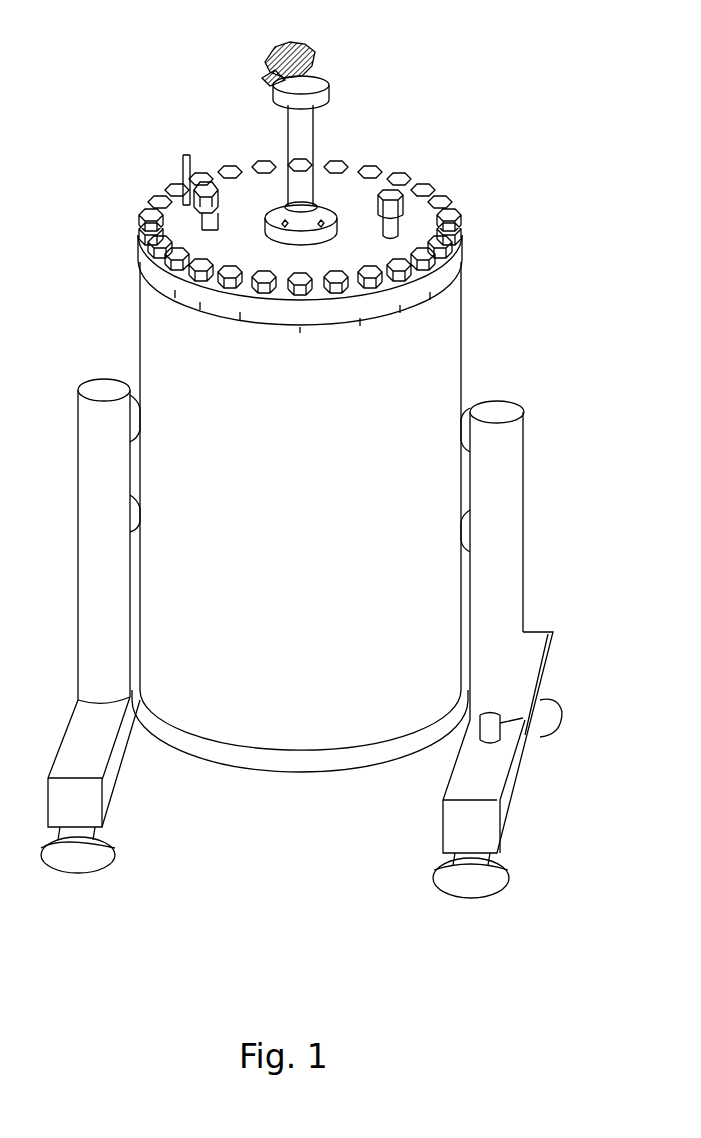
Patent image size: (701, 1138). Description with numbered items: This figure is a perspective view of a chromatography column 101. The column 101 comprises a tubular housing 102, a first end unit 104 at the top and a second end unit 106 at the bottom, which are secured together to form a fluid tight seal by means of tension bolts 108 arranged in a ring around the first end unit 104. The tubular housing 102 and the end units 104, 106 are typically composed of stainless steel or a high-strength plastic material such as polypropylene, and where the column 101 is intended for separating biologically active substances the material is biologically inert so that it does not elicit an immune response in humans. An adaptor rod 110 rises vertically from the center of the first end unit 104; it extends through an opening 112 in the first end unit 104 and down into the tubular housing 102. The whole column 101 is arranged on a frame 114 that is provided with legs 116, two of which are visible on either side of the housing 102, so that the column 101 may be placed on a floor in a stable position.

The chromatography column 101 is at (428, 77).
The tubular housing 102 is at (462, 330).
The first end unit 104 is at (462, 285).
The second end unit 106 is at (255, 770).
The tension bolts 108 is at (435, 186).
The adaptor rod 110 is at (283, 138).
The opening 112 is at (287, 207).
The frame 114 is at (523, 495).
The legs 116 is at (523, 612).